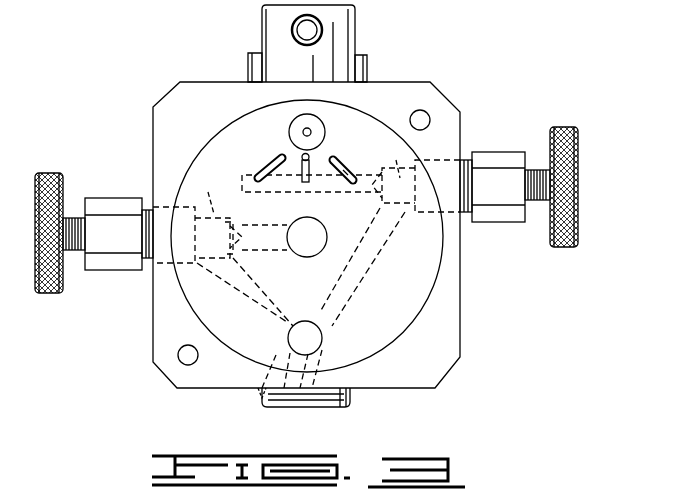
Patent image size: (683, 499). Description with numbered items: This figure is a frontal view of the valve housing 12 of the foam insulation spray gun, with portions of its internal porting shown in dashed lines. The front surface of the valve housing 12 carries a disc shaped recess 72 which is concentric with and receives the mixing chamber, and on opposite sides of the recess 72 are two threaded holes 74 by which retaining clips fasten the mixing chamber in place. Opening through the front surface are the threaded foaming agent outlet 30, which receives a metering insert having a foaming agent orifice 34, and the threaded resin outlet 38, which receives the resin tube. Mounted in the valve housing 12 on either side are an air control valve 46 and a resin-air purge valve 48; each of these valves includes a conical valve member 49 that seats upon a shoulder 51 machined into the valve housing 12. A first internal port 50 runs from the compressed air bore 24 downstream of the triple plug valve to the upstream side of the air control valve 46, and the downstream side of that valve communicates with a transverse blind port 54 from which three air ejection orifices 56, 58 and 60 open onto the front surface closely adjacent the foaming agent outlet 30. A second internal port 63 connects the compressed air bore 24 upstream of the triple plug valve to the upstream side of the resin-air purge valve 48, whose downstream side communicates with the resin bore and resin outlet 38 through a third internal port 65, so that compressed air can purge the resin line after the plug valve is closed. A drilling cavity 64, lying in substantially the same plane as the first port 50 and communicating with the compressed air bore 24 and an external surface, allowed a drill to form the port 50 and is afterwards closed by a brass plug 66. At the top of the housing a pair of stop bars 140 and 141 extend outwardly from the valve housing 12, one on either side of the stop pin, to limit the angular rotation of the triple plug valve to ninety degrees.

The valve housing 12 is at (416, 82).
The compressed air inlet bore 24 is at (323, 348).
The foaming agent outlet 30 is at (292, 126).
The foaming agent orifice 34 is at (311, 131).
The resin outlet 38 is at (327, 237).
The air control valve 46 is at (500, 150).
The resin-air purge valve 48 is at (105, 198).
The conical valve member 49 is at (270, 190).
The first internal port 50 is at (358, 283).
The shoulder 51 is at (301, 179).
The transverse blind port 54 is at (270, 196).
The air ejection orifice 56 is at (268, 166).
The air ejection orifice 58 is at (320, 170).
The air ejection orifice 60 is at (348, 168).
The second internal port 63 is at (268, 298).
The drilling cavity 64 is at (258, 396).
The third internal port 65 is at (253, 252).
The brass plug 66 is at (300, 395).
The disc shaped recess 72 is at (397, 342).
The threaded holes 74 is at (427, 114).
The stop bar 140 is at (247, 66).
The stop bar 141 is at (362, 62).